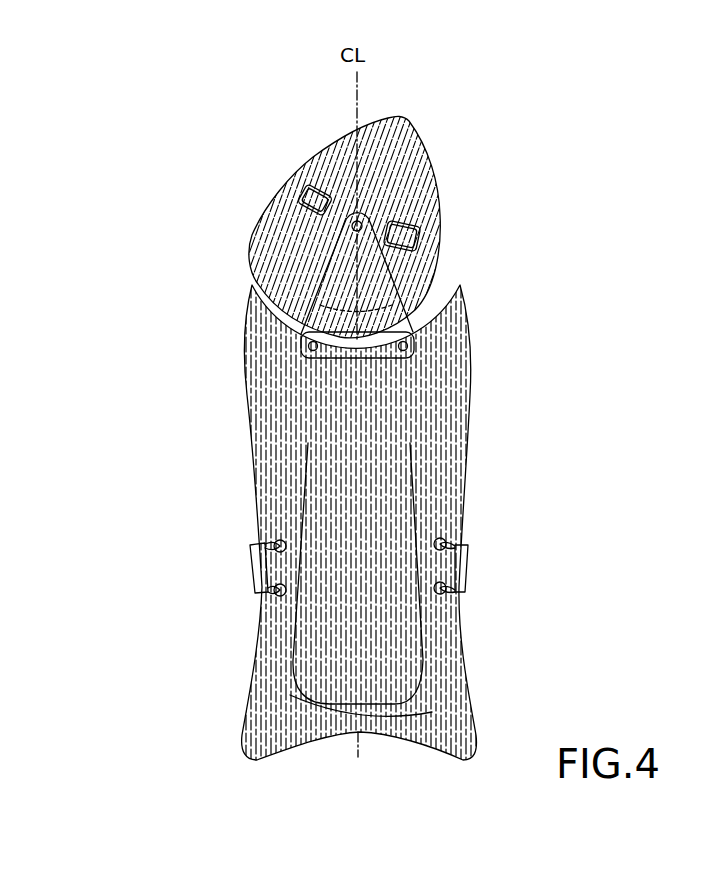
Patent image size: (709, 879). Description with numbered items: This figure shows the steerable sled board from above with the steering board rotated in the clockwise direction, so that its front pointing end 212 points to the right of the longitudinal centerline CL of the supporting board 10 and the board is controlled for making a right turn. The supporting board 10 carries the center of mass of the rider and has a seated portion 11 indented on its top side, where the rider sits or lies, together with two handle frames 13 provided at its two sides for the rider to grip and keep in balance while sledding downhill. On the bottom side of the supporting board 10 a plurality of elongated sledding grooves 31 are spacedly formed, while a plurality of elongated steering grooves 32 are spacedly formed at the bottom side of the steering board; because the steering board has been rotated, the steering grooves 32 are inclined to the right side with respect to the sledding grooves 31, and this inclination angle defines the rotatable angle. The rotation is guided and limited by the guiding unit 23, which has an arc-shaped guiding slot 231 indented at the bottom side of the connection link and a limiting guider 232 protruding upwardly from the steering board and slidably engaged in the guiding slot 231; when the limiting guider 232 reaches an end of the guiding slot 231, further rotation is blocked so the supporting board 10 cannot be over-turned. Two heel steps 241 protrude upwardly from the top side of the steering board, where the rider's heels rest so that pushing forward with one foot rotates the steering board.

The supporting board 10 is at (283, 448).
The seated portion 11 is at (393, 693).
The handle frames 13 is at (465, 545).
The guiding unit 23 is at (214, 280).
The sledding grooves 31 is at (452, 446).
The steering grooves 32 is at (409, 166).
The front pointing end 212 is at (410, 112).
The guiding slot 231 is at (432, 254).
The limiting guider 232 is at (301, 343).
The heel steps 241 is at (304, 201).